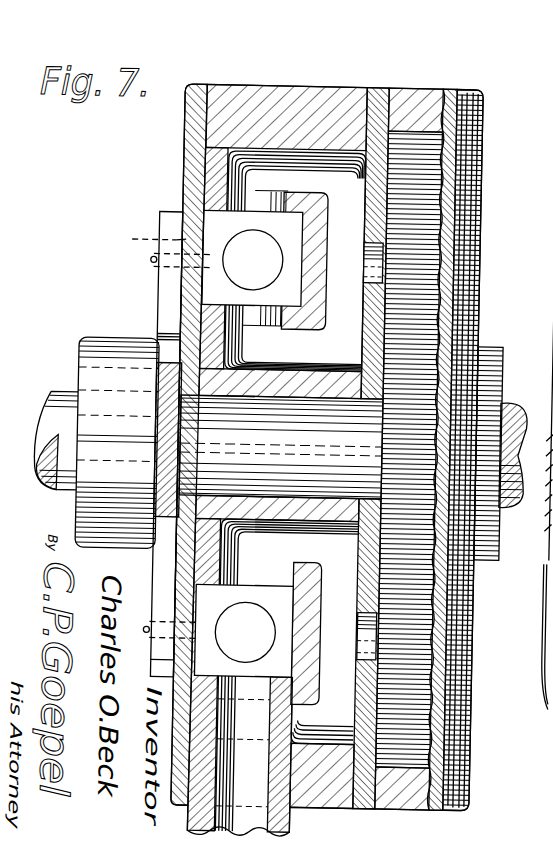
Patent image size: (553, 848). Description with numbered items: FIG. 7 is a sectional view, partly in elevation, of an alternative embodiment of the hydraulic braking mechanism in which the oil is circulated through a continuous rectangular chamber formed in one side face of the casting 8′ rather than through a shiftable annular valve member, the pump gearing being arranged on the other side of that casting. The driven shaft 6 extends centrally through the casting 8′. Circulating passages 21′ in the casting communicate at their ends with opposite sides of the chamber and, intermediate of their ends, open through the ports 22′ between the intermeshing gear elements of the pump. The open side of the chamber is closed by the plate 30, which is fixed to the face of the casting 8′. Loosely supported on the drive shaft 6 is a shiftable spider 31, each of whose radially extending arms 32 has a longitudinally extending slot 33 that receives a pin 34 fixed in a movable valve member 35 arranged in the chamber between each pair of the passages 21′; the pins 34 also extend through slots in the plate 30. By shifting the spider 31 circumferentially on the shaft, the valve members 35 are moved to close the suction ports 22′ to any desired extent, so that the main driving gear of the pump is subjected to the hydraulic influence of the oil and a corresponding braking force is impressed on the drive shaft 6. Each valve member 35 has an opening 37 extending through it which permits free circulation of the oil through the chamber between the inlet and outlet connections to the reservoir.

The driven shaft 6 is at (71, 497).
The casting 8′ is at (267, 94).
The circulating passages 21′ is at (308, 163).
The ports 22′ is at (375, 268).
The plate 30 is at (188, 138).
The shiftable spider 31 is at (165, 378).
The radially extending arms 32 is at (166, 291).
The longitudinally extending slot 33 is at (139, 231).
The pin 34 is at (147, 262).
The movable valve member 35 is at (287, 224).
The opening 37 is at (265, 273).